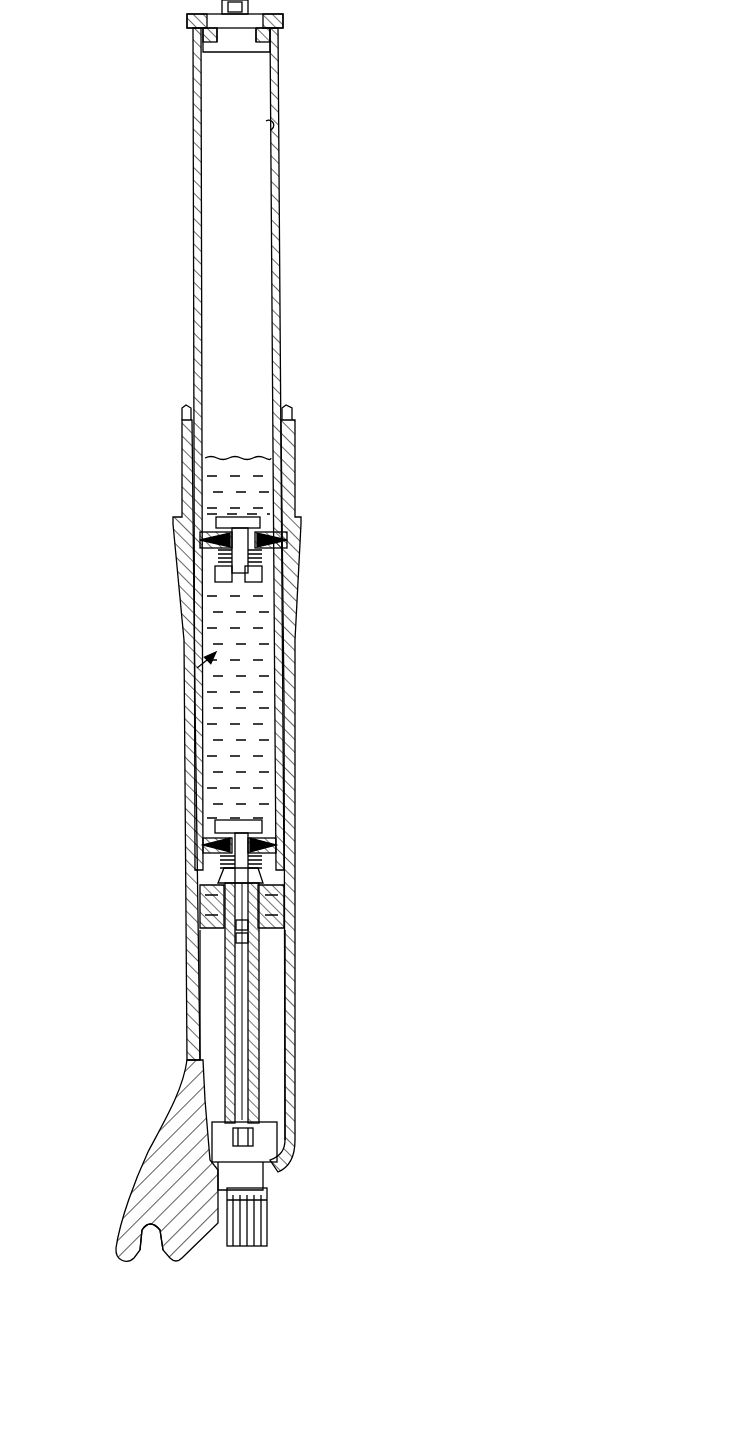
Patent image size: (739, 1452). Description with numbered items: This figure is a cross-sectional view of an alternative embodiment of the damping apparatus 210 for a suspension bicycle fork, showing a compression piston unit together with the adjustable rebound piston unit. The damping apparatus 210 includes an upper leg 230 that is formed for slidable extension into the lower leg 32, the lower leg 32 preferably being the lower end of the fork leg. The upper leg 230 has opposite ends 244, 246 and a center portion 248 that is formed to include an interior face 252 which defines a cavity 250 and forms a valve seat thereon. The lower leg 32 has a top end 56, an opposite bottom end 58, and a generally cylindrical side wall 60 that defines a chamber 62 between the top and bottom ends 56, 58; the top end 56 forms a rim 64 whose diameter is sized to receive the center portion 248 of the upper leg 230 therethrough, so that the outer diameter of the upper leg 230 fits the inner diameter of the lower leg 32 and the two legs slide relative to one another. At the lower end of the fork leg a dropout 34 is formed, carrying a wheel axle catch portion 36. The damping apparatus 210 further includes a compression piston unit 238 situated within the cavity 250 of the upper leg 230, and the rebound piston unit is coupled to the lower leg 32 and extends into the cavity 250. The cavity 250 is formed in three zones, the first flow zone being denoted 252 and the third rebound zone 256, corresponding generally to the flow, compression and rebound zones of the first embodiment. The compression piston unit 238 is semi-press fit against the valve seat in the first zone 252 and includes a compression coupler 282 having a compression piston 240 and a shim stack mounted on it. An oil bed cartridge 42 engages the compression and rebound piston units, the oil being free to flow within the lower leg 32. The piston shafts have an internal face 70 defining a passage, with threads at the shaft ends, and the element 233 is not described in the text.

The damping apparatus 210 is at (137, 97).
The end of upper leg 244 is at (276, 27).
The cavity 250 is at (247, 111).
The interior face 252 is at (270, 130).
The upper leg 230 is at (279, 195).
The center portion 248 is at (193, 207).
The rim 64 is at (186, 405).
The top end 56 is at (296, 425).
The compression coupler 282 is at (254, 507).
The compression piston 240 is at (296, 505).
The compression piston unit 238 is at (297, 545).
The valve assembly 233 is at (196, 565).
The oil bed cartridge 42 is at (300, 620).
The lower leg 32 is at (296, 693).
The side wall 60 is at (183, 712).
The third zone 256 is at (206, 866).
The end of upper leg 246 is at (188, 908).
The chamber 62 is at (271, 953).
The internal face 70 is at (250, 1025).
The dropout 34 is at (149, 1151).
The wheel axle catch portion 36 is at (118, 1228).
The bottom end 58 is at (283, 1160).